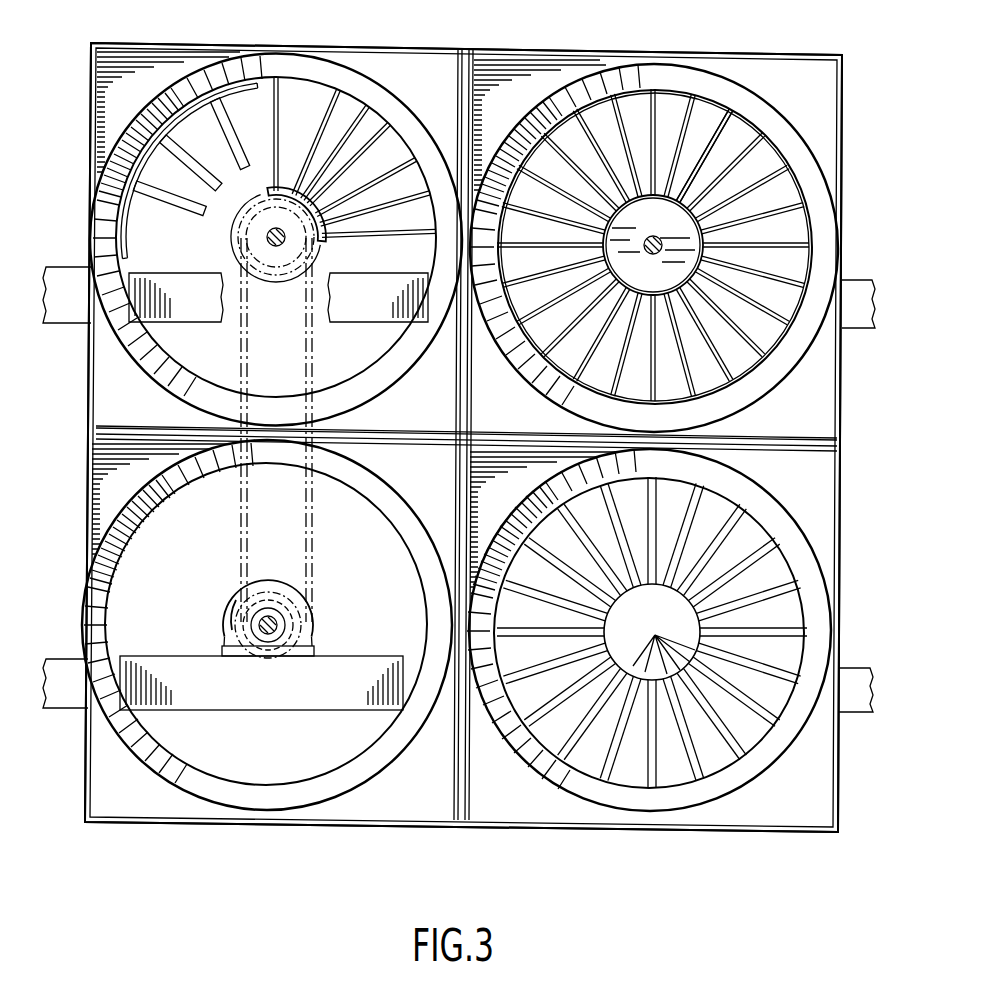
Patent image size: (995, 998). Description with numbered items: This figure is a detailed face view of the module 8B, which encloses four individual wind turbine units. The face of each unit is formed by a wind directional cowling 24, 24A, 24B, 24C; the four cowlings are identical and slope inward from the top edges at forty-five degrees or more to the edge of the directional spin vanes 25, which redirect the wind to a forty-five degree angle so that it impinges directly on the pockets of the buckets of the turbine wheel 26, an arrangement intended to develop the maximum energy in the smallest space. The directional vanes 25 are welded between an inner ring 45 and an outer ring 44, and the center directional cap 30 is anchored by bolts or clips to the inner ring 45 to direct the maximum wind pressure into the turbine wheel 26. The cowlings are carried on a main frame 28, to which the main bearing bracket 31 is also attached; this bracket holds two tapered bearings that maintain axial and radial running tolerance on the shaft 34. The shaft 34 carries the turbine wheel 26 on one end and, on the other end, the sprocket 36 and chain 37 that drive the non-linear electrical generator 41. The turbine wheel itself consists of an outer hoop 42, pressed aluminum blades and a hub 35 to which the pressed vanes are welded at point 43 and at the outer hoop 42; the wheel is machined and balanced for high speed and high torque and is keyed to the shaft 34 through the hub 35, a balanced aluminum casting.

The module 8B is at (714, 45).
The wind directional cowling 24 is at (505, 57).
The wind directional cowling 24A is at (400, 57).
The wind directional cowling 24B is at (376, 813).
The wind directional cowling 24C is at (508, 813).
The directional spin vanes 25 is at (379, 212).
The turbine wheel 26 is at (168, 214).
The main frame 28 is at (182, 322).
The center directional cap 30 is at (270, 190).
The main bearing bracket 31 is at (292, 658).
The shaft 34 is at (268, 238).
The hub 35 is at (688, 237).
The sprocket 36 is at (270, 283).
The chain 37 is at (313, 356).
The non-linear electrical generator 41 is at (322, 246).
The outer hoop 42 is at (712, 140).
The weld point 43 is at (697, 190).
The outer ring 44 is at (263, 82).
The inner ring 45 is at (667, 202).